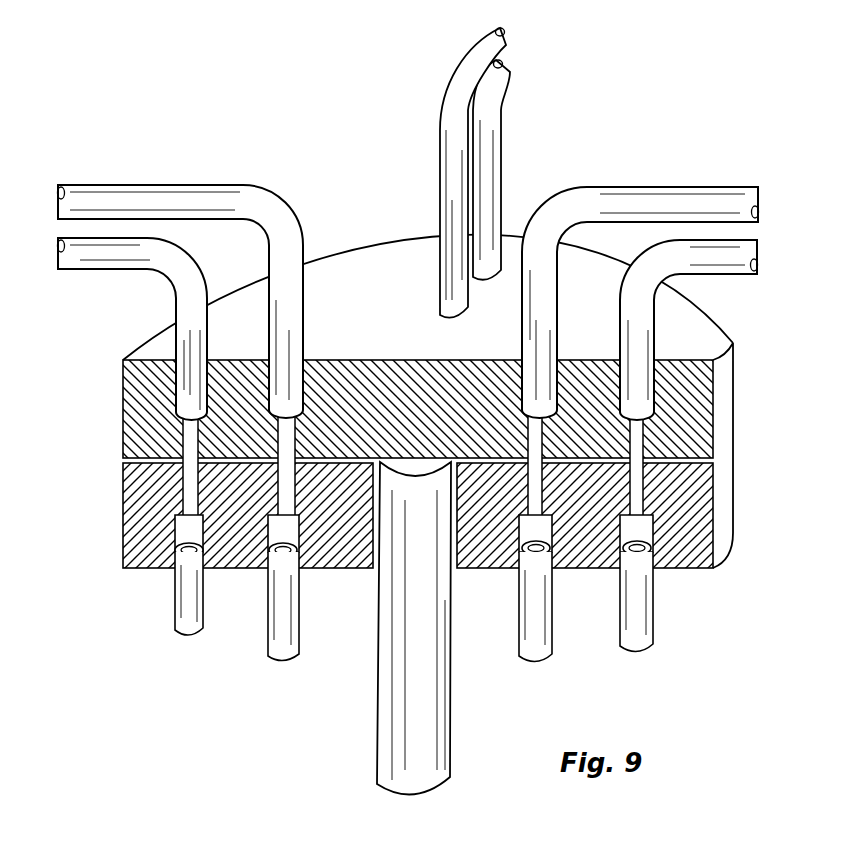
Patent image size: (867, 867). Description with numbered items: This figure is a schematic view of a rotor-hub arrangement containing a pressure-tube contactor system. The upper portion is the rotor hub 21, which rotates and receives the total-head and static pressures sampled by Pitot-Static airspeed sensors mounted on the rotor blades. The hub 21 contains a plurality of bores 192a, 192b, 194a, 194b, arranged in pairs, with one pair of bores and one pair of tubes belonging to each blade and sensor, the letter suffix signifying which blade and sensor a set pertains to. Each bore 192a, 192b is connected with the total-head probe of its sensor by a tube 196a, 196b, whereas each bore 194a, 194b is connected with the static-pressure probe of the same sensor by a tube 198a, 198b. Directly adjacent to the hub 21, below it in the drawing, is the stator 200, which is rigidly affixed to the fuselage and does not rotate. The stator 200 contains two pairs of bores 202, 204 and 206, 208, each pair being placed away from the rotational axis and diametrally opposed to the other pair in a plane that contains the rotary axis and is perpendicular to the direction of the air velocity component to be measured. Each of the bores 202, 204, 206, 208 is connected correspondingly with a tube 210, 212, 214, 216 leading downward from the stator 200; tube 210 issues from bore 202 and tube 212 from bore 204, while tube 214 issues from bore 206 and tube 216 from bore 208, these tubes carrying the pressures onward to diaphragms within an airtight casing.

The rotor hub 21 is at (353, 277).
The bore 192a is at (180, 406).
The bore 192b is at (640, 433).
The bore 194a is at (293, 433).
The bore 194b is at (540, 447).
The tube 196a is at (132, 267).
The tube 196b is at (757, 268).
The tube 198a is at (132, 184).
The tube 198b is at (733, 185).
The stator 200 is at (706, 555).
The bore 202 is at (178, 526).
The bore 204 is at (292, 533).
The bore 206 is at (622, 530).
The bore 208 is at (548, 528).
The tube 210 is at (192, 637).
The tube 212 is at (268, 665).
The tube 214 is at (655, 612).
The tube 216 is at (515, 618).